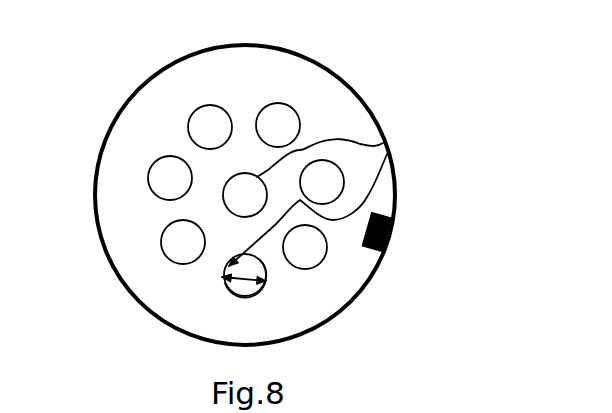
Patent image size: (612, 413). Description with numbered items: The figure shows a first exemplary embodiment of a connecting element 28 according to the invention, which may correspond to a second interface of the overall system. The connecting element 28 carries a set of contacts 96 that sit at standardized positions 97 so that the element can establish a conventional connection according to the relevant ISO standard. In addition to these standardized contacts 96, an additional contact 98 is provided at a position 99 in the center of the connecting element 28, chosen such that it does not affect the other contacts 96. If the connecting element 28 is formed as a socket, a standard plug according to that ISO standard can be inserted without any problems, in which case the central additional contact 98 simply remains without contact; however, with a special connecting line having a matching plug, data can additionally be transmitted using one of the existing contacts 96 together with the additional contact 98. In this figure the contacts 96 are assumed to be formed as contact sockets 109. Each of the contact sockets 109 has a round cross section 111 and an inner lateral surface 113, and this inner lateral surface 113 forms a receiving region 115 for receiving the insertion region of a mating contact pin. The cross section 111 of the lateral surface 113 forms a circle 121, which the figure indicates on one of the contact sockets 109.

The connecting element 28 is at (470, 103).
The contacts 96 is at (192, 117).
The standardized positions 97 is at (280, 95).
The additional contact 98 is at (383, 143).
The position 99 is at (246, 171).
The contact sockets 109 is at (266, 278).
The round cross section 111 is at (233, 293).
The inner lateral surface 113 is at (258, 293).
The receiving region 115 is at (224, 277).
The circle 121 is at (388, 152).